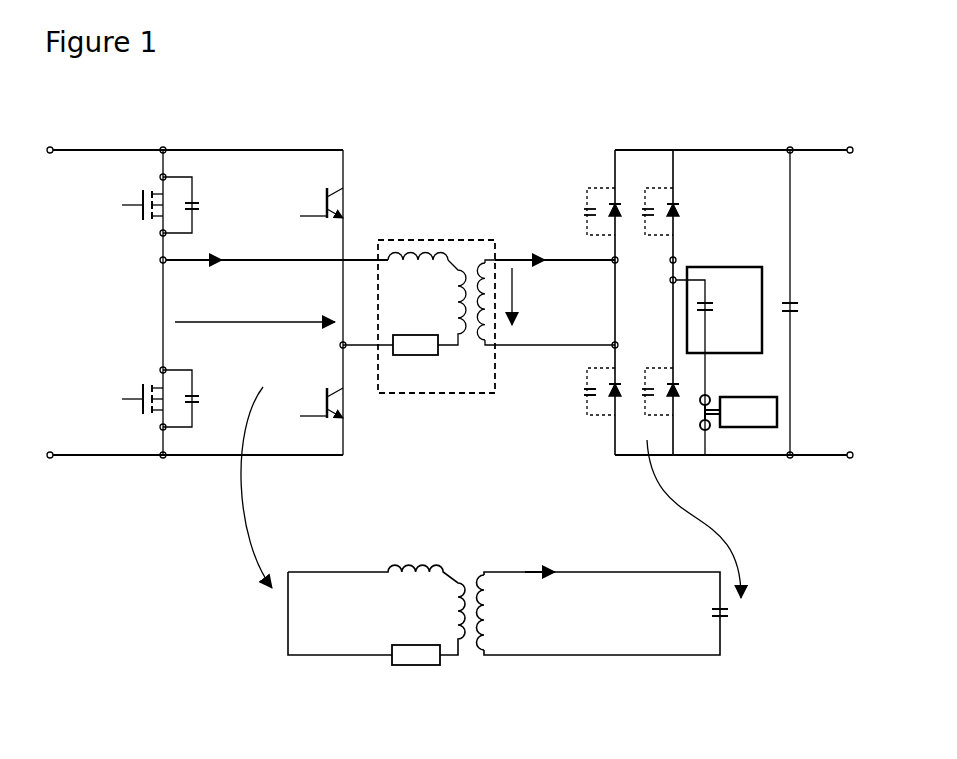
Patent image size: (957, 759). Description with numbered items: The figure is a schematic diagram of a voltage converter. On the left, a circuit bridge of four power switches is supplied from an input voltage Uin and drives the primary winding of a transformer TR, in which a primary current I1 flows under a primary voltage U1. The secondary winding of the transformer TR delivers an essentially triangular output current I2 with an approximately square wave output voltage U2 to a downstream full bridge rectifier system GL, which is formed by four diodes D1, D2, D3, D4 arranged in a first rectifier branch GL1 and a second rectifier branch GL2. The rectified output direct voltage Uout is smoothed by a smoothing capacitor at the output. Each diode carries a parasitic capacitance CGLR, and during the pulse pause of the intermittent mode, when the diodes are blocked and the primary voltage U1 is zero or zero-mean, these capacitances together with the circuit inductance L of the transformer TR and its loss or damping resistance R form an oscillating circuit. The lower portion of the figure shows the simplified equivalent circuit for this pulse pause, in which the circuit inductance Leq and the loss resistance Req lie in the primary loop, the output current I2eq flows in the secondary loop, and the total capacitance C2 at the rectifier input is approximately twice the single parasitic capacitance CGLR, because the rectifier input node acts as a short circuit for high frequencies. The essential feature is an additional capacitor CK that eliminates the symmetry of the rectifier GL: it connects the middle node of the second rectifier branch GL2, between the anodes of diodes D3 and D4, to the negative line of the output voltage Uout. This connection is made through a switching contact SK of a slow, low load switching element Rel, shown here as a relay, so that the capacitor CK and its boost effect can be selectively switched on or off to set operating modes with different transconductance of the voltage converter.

The transformer TR is at (445, 230).
The full bridge rectifier system GL is at (648, 128).
The first rectifier leg GL1 is at (612, 140).
The second rectifier branch GL2 is at (677, 140).
The diode D1 is at (614, 211).
The diode D2 is at (614, 391).
The diode D3 is at (672, 211).
The diode D4 is at (672, 391).
The capacitor CK is at (716, 361).
The switching contact SK is at (718, 436).
The switching element Rel is at (748, 412).
The parasitic capacitance of the diodes CGLR is at (578, 417).
The input voltage Uin is at (75, 157).
The output direct voltage Uout is at (810, 157).
The primary current I1 is at (274, 276).
The primary voltage U1 is at (255, 337).
The output current I2 is at (555, 245).
The output voltage U2 is at (539, 296).
The circuit inductance L is at (418, 279).
The loss resistance R is at (415, 364).
The circuit inductance Leq is at (376, 610).
The loss resistance Req is at (416, 673).
The output current I2eq is at (544, 556).
The total capacitance C2 is at (779, 628).